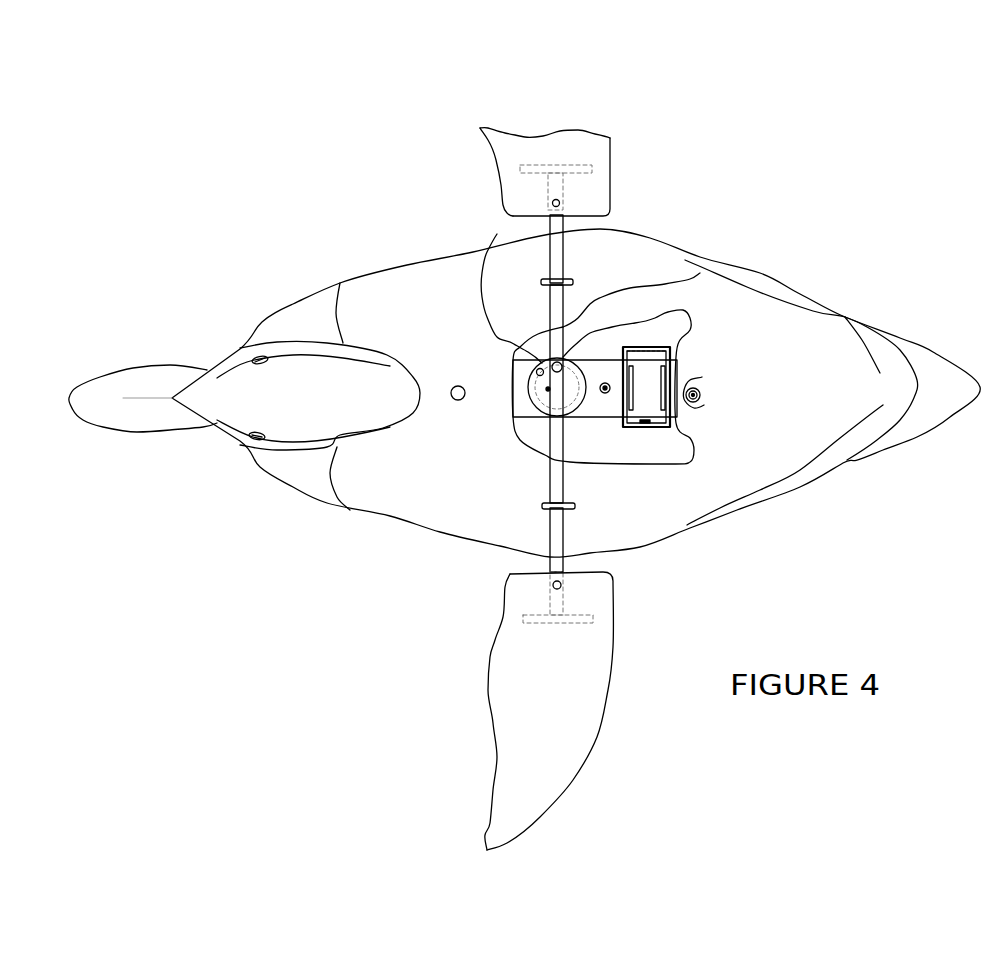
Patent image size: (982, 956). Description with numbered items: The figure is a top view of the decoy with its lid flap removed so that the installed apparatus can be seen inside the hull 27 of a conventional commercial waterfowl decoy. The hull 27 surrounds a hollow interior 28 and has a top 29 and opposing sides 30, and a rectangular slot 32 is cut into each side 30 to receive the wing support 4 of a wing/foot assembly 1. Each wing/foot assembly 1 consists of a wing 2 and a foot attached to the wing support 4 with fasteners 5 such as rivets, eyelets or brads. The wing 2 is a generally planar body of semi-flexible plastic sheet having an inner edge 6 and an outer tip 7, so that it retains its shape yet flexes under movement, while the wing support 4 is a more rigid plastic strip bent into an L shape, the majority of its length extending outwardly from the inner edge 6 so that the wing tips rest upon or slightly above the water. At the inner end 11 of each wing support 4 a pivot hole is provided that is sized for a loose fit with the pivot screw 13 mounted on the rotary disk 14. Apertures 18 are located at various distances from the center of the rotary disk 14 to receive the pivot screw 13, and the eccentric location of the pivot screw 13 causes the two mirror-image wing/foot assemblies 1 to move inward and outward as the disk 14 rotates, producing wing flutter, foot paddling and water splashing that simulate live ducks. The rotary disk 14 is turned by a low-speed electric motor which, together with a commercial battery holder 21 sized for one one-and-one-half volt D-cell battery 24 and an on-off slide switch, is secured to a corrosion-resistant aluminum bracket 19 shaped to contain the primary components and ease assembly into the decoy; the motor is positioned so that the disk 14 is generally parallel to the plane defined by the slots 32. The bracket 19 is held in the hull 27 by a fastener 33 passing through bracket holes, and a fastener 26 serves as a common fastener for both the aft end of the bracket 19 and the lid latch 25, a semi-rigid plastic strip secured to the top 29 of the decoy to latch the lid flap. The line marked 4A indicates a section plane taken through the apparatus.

The wing/foot assembly 1 is at (578, 223).
The wing 2 is at (508, 157).
The wing support 4 is at (553, 255).
The section line 4A is at (558, 90).
The fasteners 5 is at (563, 203).
The inner edge 6 is at (527, 207).
The outer tip 7 is at (485, 847).
The inner end 11 is at (700, 273).
The pivot screw 13 is at (537, 372).
The rotary disk 14 is at (672, 344).
The apertures 18 is at (546, 389).
The bracket 19 is at (590, 418).
The battery holder 21 is at (655, 348).
The D-cell battery 24 is at (673, 422).
The lid latch 25 is at (703, 378).
The fastener 26 is at (706, 396).
The hull 27 is at (280, 485).
The hollow interior 28 is at (612, 450).
The top 29 is at (740, 442).
The opposing sides 30 is at (390, 515).
The rectangular slot 32 is at (543, 282).
The fastener 33 is at (458, 386).